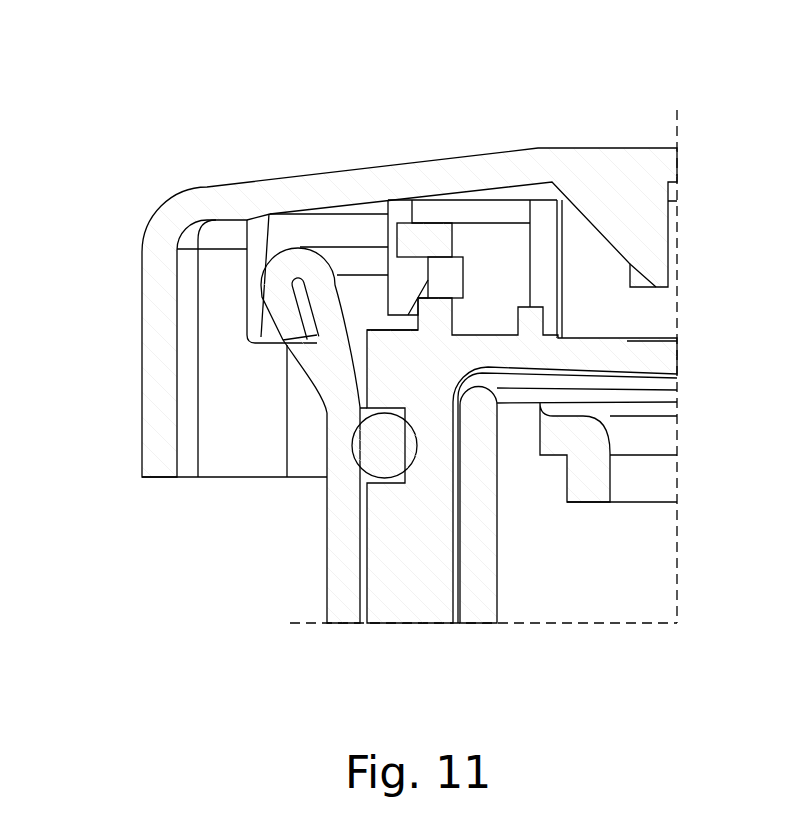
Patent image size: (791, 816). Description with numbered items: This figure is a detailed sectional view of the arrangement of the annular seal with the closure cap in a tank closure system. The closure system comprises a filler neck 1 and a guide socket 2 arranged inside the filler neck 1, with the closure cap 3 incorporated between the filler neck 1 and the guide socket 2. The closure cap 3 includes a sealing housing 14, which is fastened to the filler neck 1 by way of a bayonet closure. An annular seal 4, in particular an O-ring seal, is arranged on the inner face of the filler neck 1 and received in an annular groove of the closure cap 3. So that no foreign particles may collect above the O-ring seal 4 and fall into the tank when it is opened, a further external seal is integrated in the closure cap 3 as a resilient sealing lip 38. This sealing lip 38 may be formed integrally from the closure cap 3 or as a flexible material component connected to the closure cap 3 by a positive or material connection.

The filler neck 1 is at (346, 583).
The guide socket 2 is at (484, 590).
The closure cap 3 is at (407, 168).
The annular seal 4 is at (381, 450).
The sealing housing 14 is at (403, 601).
The resilient sealing lip 38 is at (238, 268).